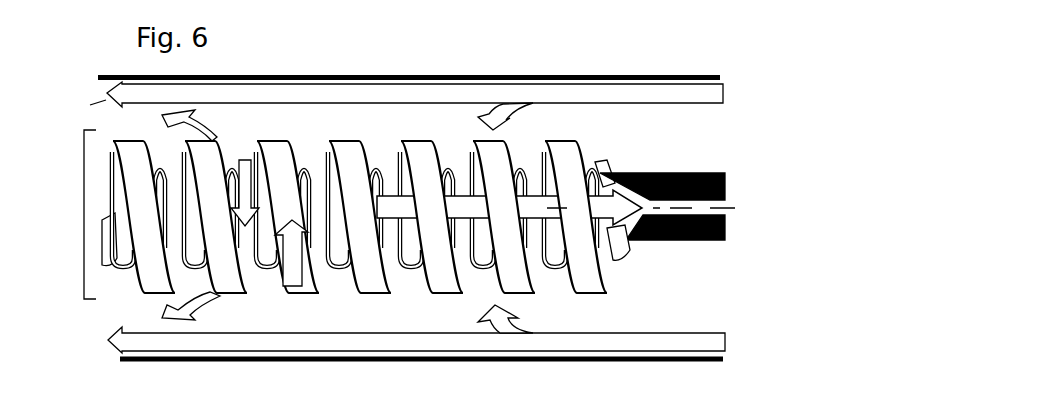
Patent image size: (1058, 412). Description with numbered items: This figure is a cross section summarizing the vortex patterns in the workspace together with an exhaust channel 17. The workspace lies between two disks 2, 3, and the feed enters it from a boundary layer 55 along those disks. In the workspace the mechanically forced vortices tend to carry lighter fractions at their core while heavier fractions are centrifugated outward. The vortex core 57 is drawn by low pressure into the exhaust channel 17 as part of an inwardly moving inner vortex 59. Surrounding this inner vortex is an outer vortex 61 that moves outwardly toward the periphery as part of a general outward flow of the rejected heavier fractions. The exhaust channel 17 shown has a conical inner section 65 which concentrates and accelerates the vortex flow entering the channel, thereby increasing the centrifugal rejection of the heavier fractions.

The disk 2 is at (403, 76).
The disk 3 is at (353, 358).
The exhaust channel 17 is at (658, 205).
The boundary layer 55 is at (513, 111).
The vortex core 57 is at (599, 200).
The inner vortex 59 is at (240, 160).
The outer vortex 61 is at (300, 268).
The conical inner section 65 is at (646, 243).